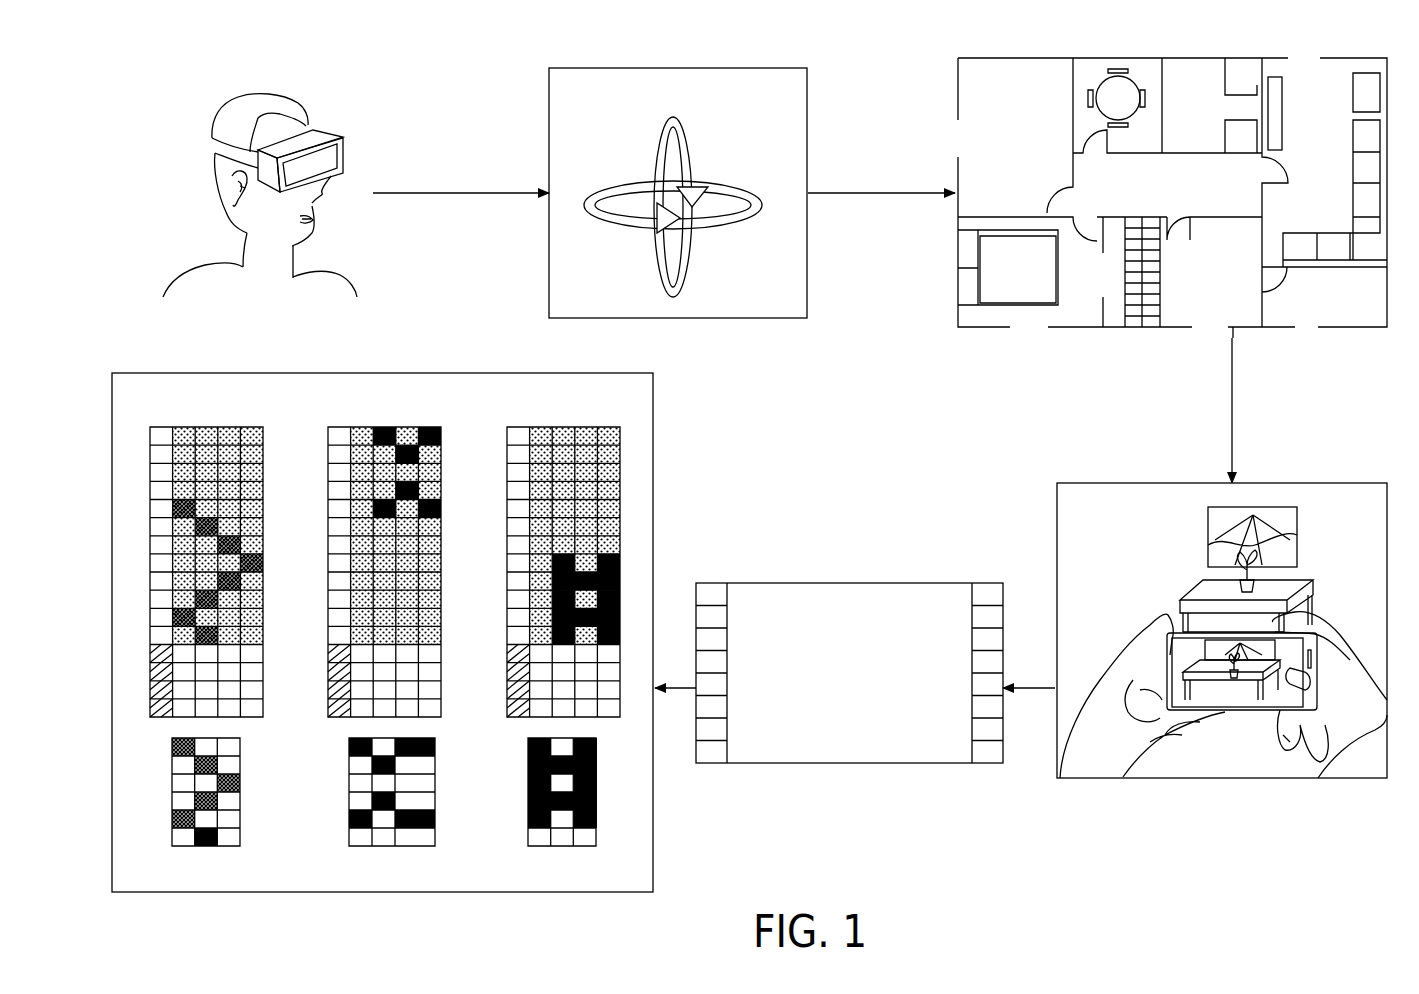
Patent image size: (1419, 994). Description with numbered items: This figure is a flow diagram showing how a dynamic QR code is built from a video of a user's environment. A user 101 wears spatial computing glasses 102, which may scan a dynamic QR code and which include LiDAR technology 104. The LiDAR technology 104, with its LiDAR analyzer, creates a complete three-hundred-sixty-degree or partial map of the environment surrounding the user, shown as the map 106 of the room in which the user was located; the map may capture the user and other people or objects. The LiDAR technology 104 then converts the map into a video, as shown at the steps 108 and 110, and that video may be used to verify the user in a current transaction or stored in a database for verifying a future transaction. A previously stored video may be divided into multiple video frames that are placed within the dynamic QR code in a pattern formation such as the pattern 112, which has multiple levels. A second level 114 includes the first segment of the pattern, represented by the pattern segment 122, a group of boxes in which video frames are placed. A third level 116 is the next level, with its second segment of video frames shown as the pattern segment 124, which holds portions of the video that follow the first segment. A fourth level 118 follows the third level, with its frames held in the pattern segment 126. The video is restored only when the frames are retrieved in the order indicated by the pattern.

The user 101 is at (200, 265).
The spatial computing glasses 102 is at (327, 130).
The LiDAR technology 104 is at (680, 68).
The map 106 is at (1180, 58).
The step of converting the map into a video 108 is at (1318, 483).
The step of generating the video 110 is at (858, 583).
The pattern 112 is at (395, 373).
The second level 114 is at (208, 427).
The third level 116 is at (378, 427).
The fourth level 118 is at (558, 427).
The pattern segment 122 is at (203, 846).
The pattern segment 124 is at (380, 846).
The pattern segment 126 is at (560, 846).